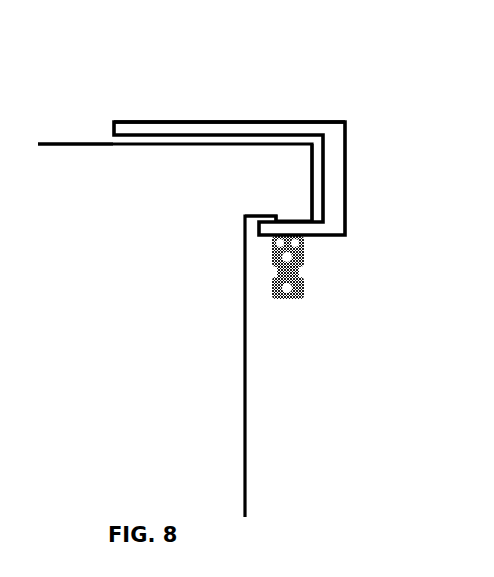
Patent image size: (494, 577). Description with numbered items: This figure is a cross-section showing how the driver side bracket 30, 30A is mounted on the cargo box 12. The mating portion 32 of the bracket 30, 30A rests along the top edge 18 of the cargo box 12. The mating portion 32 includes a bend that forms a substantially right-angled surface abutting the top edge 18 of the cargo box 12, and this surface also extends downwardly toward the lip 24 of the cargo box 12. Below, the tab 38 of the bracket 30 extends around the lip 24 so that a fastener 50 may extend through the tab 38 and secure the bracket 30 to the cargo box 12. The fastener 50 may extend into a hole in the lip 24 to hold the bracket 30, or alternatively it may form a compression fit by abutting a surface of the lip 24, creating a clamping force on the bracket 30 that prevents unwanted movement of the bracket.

The cargo box 12 is at (88, 136).
The top edge 18 is at (69, 142).
The lip 24 is at (295, 191).
The driver side bracket 30 is at (283, 164).
The driver side bracket 30A is at (356, 139).
The mating portion 32 is at (231, 128).
The tab 38 is at (272, 229).
The fastener 50 is at (288, 296).